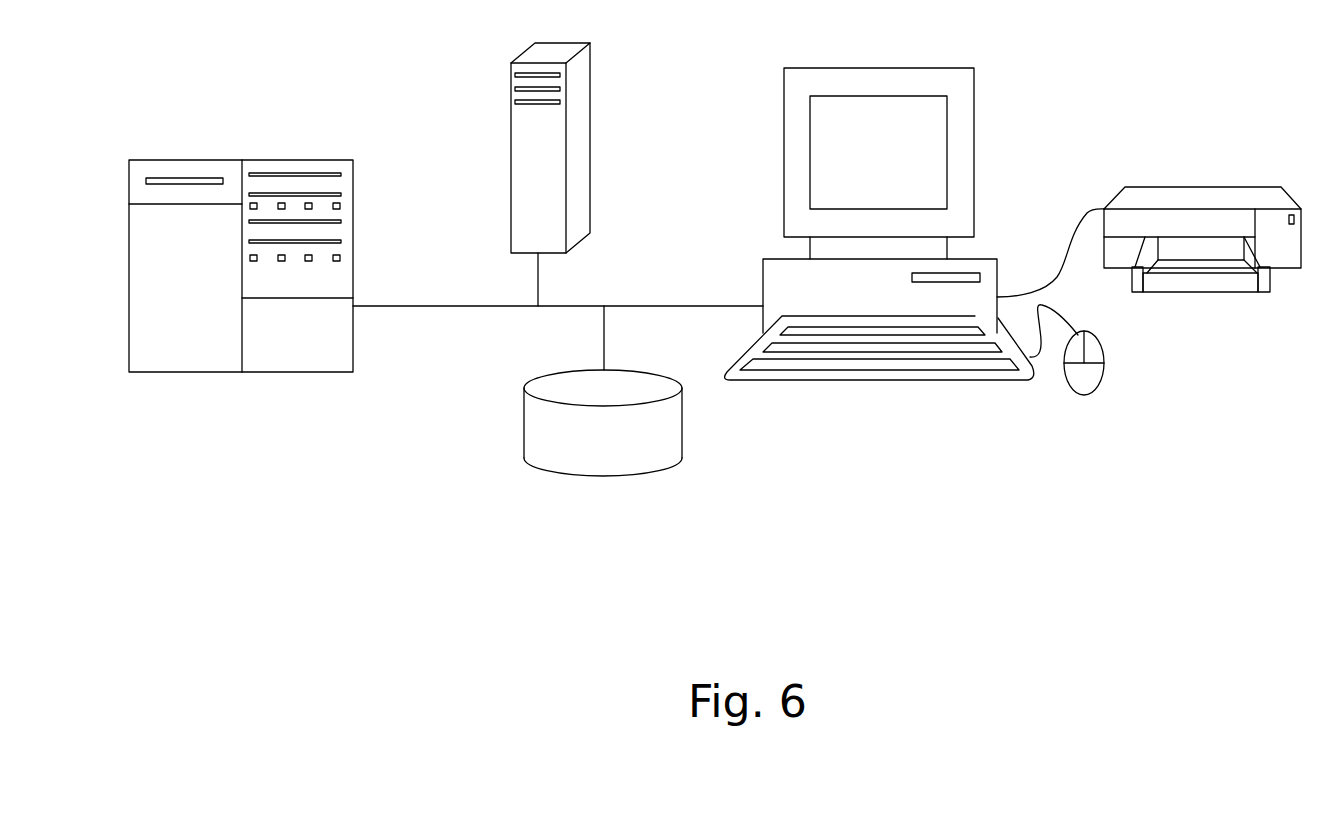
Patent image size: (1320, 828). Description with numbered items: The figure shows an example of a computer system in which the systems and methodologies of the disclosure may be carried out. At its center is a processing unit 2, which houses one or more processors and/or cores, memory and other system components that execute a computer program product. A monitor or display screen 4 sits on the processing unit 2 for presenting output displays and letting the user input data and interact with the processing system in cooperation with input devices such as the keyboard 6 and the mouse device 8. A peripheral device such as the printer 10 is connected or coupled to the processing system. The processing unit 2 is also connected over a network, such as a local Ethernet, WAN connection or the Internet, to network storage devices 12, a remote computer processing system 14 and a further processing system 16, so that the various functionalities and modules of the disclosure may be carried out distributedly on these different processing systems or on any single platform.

The processing unit 2 is at (768, 286).
The monitor or display screen 4 is at (974, 147).
The keyboard 6 is at (940, 380).
The mouse device 8 is at (1104, 380).
The printer 10 is at (1202, 185).
The network storage devices 12 is at (627, 475).
The remote computer processing system 14 is at (590, 136).
The processing system 16 is at (287, 160).